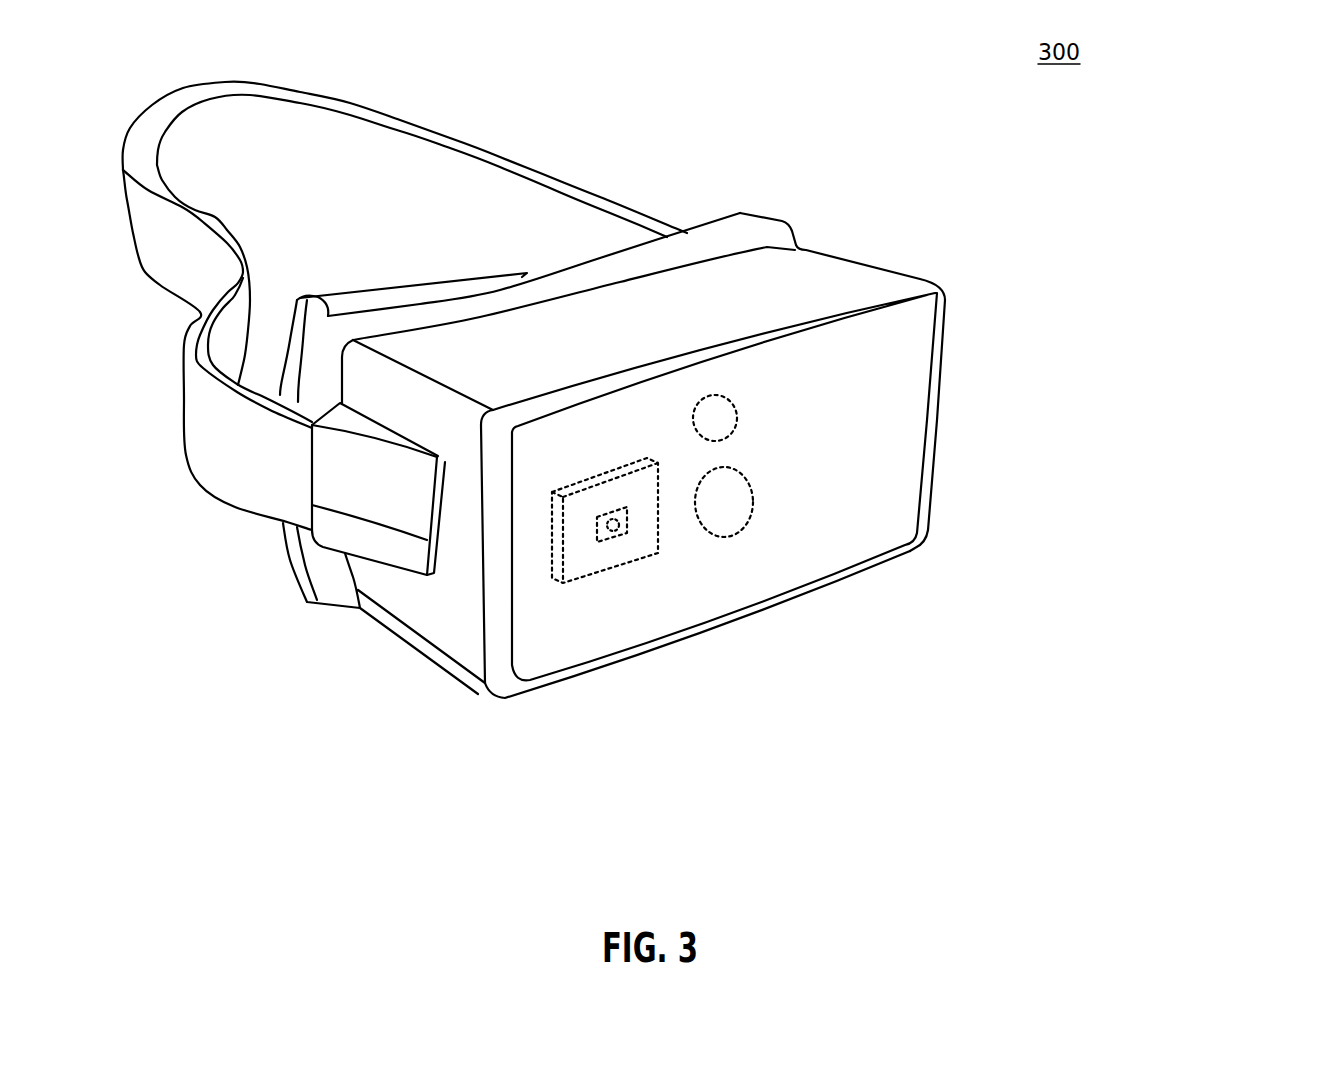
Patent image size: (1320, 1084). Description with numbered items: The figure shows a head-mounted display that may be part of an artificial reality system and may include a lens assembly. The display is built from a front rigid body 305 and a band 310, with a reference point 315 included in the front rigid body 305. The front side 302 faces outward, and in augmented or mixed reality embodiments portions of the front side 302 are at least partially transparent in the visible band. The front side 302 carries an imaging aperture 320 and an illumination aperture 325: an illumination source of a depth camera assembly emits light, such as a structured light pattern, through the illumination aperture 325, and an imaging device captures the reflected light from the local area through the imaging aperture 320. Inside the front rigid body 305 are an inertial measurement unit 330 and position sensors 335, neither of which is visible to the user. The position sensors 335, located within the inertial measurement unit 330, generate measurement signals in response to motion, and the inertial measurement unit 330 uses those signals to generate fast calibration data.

The front side 302 is at (838, 472).
The front rigid body 305 is at (940, 280).
The band 310 is at (540, 168).
The reference point 315 is at (613, 532).
The imaging aperture 320 is at (753, 502).
The illumination aperture 325 is at (731, 400).
The Inertial Measurement Unit (IMU) 330 is at (658, 537).
The position sensors 335 is at (598, 542).